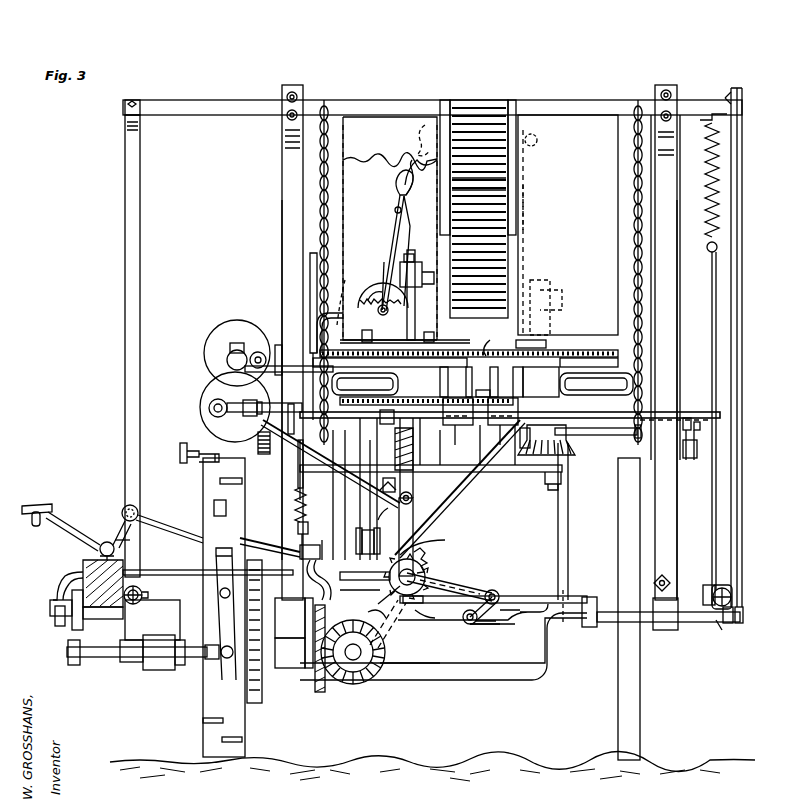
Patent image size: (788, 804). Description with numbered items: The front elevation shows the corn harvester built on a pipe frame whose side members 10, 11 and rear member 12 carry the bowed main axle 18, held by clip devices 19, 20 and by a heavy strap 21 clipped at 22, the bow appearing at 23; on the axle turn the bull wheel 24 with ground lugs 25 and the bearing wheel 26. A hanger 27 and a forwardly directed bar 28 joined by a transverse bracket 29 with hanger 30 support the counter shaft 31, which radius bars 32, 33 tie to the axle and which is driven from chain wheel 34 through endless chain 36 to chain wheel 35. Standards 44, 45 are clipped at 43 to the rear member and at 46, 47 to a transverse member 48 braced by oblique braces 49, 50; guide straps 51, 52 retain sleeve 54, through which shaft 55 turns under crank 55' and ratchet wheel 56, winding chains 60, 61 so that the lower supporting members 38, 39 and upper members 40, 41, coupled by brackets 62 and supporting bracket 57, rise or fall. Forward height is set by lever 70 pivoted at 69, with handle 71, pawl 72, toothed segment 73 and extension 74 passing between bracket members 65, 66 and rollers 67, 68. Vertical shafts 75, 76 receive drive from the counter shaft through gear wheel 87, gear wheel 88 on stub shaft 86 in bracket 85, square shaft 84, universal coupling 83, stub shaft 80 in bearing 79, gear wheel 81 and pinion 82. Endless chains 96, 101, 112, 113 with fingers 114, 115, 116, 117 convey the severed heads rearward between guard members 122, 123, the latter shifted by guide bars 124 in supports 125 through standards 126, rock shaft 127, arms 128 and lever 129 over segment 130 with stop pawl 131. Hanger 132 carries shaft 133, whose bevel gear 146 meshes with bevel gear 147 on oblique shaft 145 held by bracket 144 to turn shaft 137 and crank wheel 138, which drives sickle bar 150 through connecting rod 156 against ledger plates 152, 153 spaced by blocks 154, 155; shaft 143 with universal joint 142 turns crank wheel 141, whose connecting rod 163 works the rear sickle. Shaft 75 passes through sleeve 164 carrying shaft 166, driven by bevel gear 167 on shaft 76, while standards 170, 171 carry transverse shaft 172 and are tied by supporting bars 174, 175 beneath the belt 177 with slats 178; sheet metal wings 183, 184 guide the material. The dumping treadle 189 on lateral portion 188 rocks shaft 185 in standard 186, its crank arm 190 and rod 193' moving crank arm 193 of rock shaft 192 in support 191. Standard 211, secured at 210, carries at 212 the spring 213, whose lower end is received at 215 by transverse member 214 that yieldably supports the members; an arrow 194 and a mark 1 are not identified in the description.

The frame top bar 1 is at (205, 108).
The side member 10 is at (140, 592).
The side member 11 is at (712, 582).
The rear or transverse member 12 is at (568, 596).
The main axle 18 is at (574, 606).
The U-bolt or clip device 19 is at (726, 616).
The U-bolt or clip device 20 is at (131, 620).
The heavy strap 21 is at (64, 578).
The clip point 22 is at (72, 616).
The bowed form of axle 23 is at (466, 672).
The main drive or bull wheel 24 is at (210, 490).
The ground engaging lugs 25 is at (212, 511).
The bearing wheel 26 is at (618, 518).
The bracket device 27 is at (76, 666).
The forwardly directed bar 28 is at (322, 576).
The transverse bracket 29 is at (170, 570).
The hanger 30 is at (306, 668).
The counter shaft 31 is at (186, 666).
The radius bar 32 is at (158, 668).
The radius bar 33 is at (290, 660).
The chain wheel 34 is at (270, 547).
The chain wheel 35 is at (258, 700).
The endless chain 36 is at (283, 618).
The lower supporting member 38 is at (452, 398).
The lower supporting member 39 is at (560, 386).
The upper supporting member 40 is at (436, 367).
The upper supporting member 41 is at (514, 395).
The clip device 43 is at (668, 574).
The standard 44 is at (293, 86).
The standard 45 is at (666, 86).
The clip device 46 is at (720, 100).
The clip device 47 is at (284, 97).
The transverse member 48 is at (412, 117).
The oblique brace 49 is at (140, 248).
The oblique brace 50 is at (738, 274).
The guide strap 51 is at (284, 197).
The guide strap 52 is at (670, 272).
The sleeve 54 is at (686, 448).
The shaft 55 is at (527, 436).
The operating crank 55' is at (410, 445).
The ratchet wheel 56 is at (264, 448).
The supporting bracket 57 is at (293, 409).
The chain 60 is at (318, 222).
The chain 61 is at (646, 322).
The bracket device 62 is at (630, 386).
The bracket member 65 is at (370, 505).
The bracket member 66 is at (380, 520).
The anti-friction roller 67 is at (365, 540).
The anti-friction roller 68 is at (365, 582).
The pivot 69 is at (304, 550).
The lever 70 is at (304, 492).
The handle 71 is at (310, 270).
The pawl device 72 is at (295, 508).
The toothed segment 73 is at (297, 530).
The lever extension 74 is at (388, 540).
The vertical shaft 75 is at (408, 256).
The vertical shaft 76 is at (566, 384).
The horizontal bearing 79 is at (453, 587).
The stub shaft 80 is at (424, 568).
The gear wheel 81 is at (419, 610).
The gear pinion 82 is at (420, 552).
The universal coupling 83 is at (400, 600).
The square shaft 84 is at (392, 597).
The bracket device 85 is at (358, 586).
The stub shaft 86 is at (355, 660).
The gear wheel 87 is at (320, 694).
The gear wheel 88 is at (385, 628).
The endless chain 96 is at (365, 386).
The endless chain 101 is at (490, 397).
The endless chain 112 is at (345, 330).
The endless chain 113 is at (589, 353).
The carrying fingers 114 is at (470, 397).
The carrying fingers 115 is at (486, 394).
The carrier fingers 116 is at (626, 352).
The carrier fingers 117 is at (494, 352).
The guard member 122 is at (521, 340).
The guard member 123 is at (462, 350).
The guide bars 124 is at (418, 330).
The supports 125 is at (368, 338).
The standards 126 is at (345, 280).
The rock shaft 127 is at (378, 298).
The arm 128 is at (366, 290).
The operating lever 129 is at (395, 218).
The toothed segment 130 is at (384, 285).
The stop pawl 131 is at (404, 228).
The hanger device 132 is at (440, 488).
The shaft 133 is at (430, 508).
The shaft 137 is at (232, 400).
The crank wheel 138 is at (202, 409).
The crank wheel 141 is at (228, 330).
The universal joint 142 is at (226, 356).
The shaft 143 is at (245, 369).
The bracket device 144 is at (445, 540).
The obliquely directed shaft 145 is at (300, 460).
The bevel gear 146 is at (412, 498).
The bevel gear 147 is at (388, 478).
The sickle bar 150 is at (352, 432).
The ledger plate 152 is at (458, 426).
The ledger plate 153 is at (494, 426).
The spacer block 154 is at (458, 411).
The spacer block 155 is at (503, 411).
The connecting rod 156 is at (255, 401).
The connecting rod 163 is at (290, 360).
The sleeve 164 is at (412, 272).
The shaft 166 is at (550, 280).
The bevel gear 167 is at (540, 280).
The standard 170 is at (430, 150).
The standard 171 is at (526, 204).
The transverse shaft 172 is at (547, 139).
The supporting bar 174 is at (450, 110).
The supporting bar 175 is at (515, 110).
The endless belt 177 is at (506, 178).
The slats 178 is at (506, 190).
The sheet metal guide wing 183 is at (370, 135).
The sheet metal guide wing 184 is at (590, 130).
The rock shaft 185 is at (112, 538).
The standard 186 is at (92, 553).
The lateral portion 188 is at (68, 524).
The treadle member 189 is at (36, 508).
The crank arm 190 is at (130, 540).
The support 191 is at (508, 622).
The rock shaft 192 is at (468, 624).
The crank arm 193 is at (486, 634).
The rod 193' is at (290, 540).
The direction 194 is at (545, 552).
The securing point 210 is at (738, 600).
The standard 211 is at (742, 368).
The connection point 212 is at (712, 120).
The spring 213 is at (705, 190).
The transverse member 214 is at (693, 412).
The extension point 215 is at (722, 412).